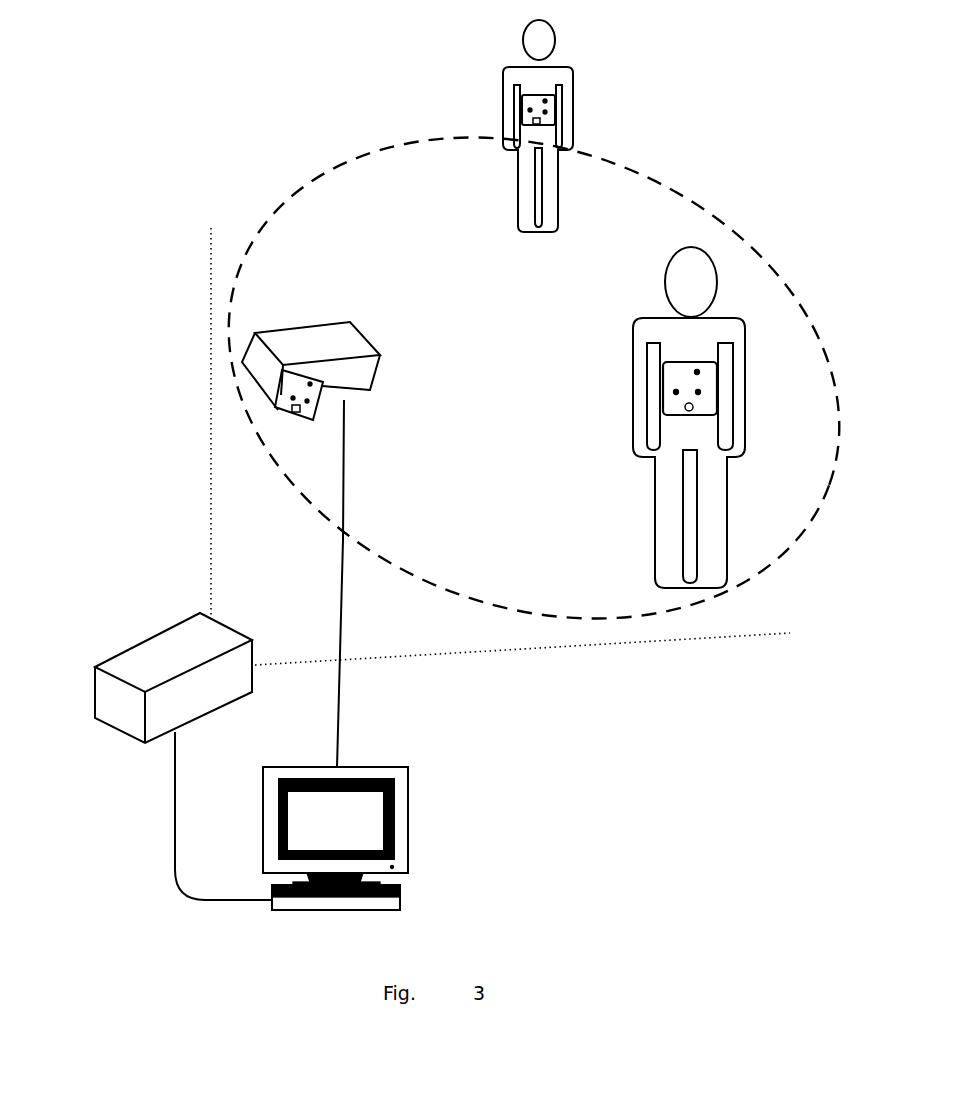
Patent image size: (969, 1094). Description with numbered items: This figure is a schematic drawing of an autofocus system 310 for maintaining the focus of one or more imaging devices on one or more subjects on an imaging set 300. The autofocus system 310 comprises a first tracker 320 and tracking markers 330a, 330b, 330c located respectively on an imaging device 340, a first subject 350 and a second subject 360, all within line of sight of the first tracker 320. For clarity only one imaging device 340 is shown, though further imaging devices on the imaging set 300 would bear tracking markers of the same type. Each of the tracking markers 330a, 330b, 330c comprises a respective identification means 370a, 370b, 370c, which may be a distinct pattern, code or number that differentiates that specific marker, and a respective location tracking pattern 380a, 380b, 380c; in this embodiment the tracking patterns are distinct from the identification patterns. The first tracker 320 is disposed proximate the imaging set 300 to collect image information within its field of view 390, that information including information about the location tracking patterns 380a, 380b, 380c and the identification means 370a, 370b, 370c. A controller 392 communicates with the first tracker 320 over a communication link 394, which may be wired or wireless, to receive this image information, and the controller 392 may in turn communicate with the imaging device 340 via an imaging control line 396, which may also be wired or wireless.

The imaging set 300 is at (476, 286).
The autofocus system 310 is at (238, 110).
The first tracker 320 is at (123, 733).
The tracking marker 330a is at (347, 388).
The tracking marker 330b is at (665, 367).
The tracking marker 330c is at (555, 108).
The imaging device 340 is at (256, 330).
The first subject 350 is at (685, 262).
The second subject 360 is at (537, 47).
The identification means 370a is at (301, 412).
The identification means 370b is at (688, 407).
The identification means 370c is at (537, 122).
The location tracking pattern 380a is at (240, 363).
The location tracking pattern 380b is at (682, 377).
The location tracking pattern 380c is at (533, 102).
The field of view 390 is at (242, 615).
The controller 392 is at (412, 888).
The communication link 394 is at (170, 833).
The imaging control line 396 is at (337, 739).